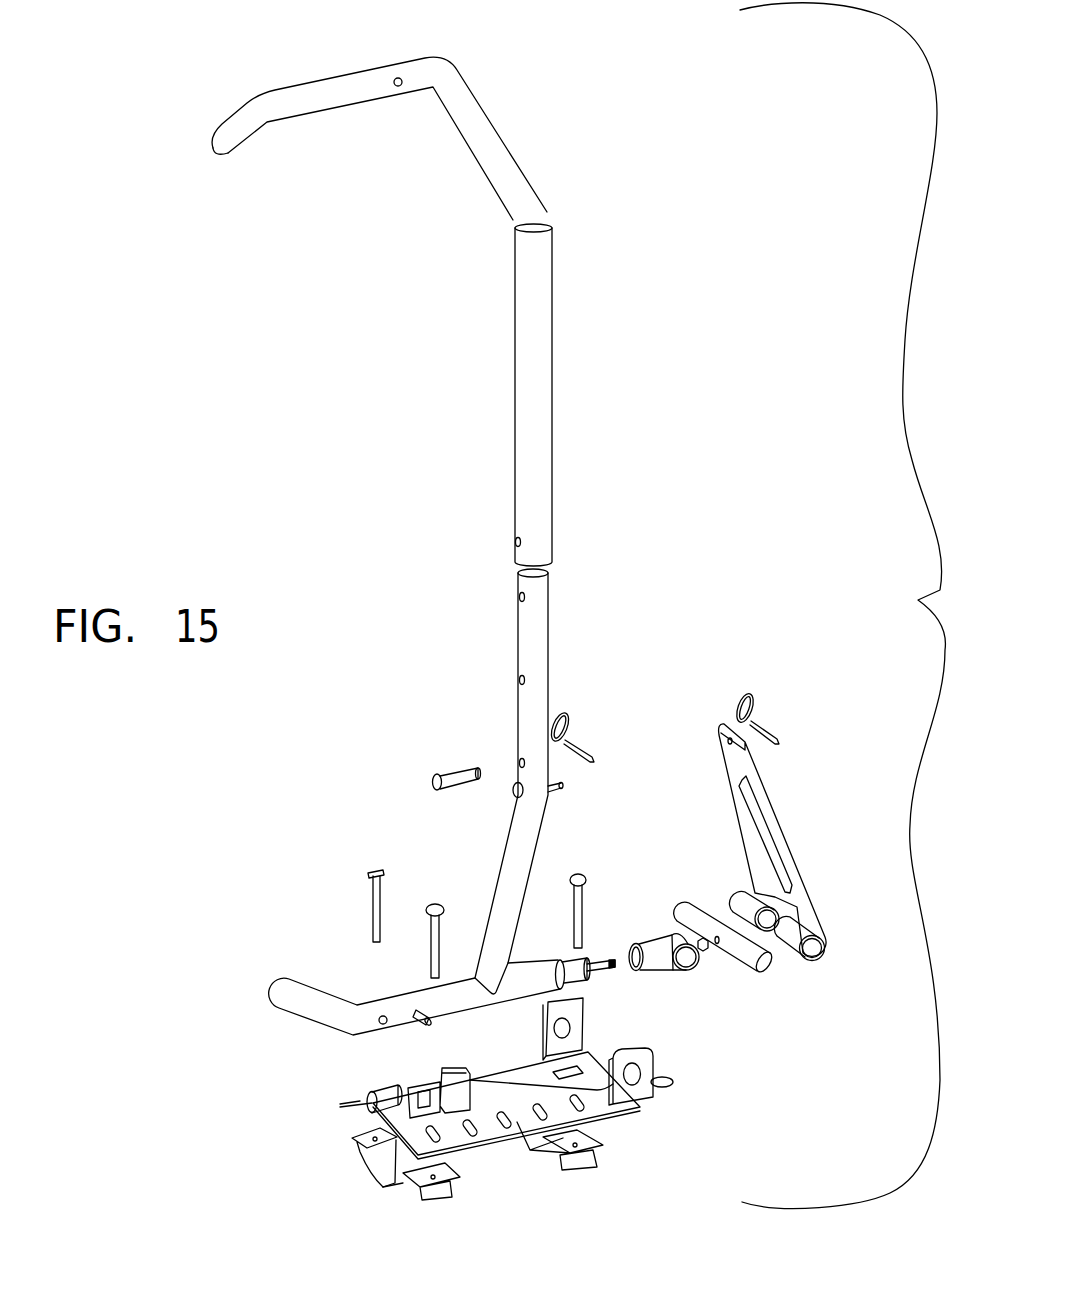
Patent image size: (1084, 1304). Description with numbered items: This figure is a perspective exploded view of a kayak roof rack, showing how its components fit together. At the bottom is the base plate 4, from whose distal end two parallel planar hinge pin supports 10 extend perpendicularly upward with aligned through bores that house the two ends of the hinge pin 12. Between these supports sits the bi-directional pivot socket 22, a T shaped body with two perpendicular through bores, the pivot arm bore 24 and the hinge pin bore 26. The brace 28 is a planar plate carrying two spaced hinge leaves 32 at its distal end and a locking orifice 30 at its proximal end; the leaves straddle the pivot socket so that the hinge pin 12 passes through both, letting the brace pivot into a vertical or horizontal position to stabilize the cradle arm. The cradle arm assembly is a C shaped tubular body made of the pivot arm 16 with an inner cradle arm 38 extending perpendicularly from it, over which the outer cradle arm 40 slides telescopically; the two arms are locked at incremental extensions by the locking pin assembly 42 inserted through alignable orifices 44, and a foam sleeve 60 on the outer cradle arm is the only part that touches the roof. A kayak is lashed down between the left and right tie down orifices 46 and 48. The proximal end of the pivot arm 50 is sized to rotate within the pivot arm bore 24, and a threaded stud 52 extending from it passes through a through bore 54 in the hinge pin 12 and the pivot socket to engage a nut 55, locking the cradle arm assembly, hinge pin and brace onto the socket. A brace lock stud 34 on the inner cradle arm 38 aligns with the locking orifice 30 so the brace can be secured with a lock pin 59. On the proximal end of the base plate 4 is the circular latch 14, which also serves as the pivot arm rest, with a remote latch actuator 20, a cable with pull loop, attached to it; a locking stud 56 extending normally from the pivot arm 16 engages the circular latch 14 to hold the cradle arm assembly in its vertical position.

The base plate 4 is at (473, 1143).
The hinge pin supports 10 is at (645, 1097).
The hinge pin 12 is at (765, 963).
The circular latch 14 is at (440, 1078).
The pivot arm 16 is at (283, 987).
The remote latch actuator 20 is at (672, 1083).
The bi-directional pivot socket 22 is at (650, 938).
The pivot arm bore 24 is at (640, 975).
The hinge pin bore 26 is at (690, 960).
The brace 28 is at (782, 843).
The locking orifice 30 is at (727, 740).
The hinge leaves 32 is at (800, 933).
The brace lock stud 34 is at (513, 792).
The inner cradle arm 38 is at (523, 638).
The outer cradle arm 40 is at (503, 157).
The locking pin assembly 42 is at (455, 772).
The alignable orifices 44 is at (518, 542).
The tie down orifice 46 is at (400, 78).
The tie down orifice 48 is at (382, 1017).
The proximal end of the pivot arm 50 is at (570, 958).
The threaded stud 52 is at (600, 960).
The through bore 54 is at (717, 937).
The nut 55 is at (712, 946).
The locking stud 56 is at (432, 1023).
The lock pin 59 is at (565, 717).
The foam sleeve 60 is at (545, 312).